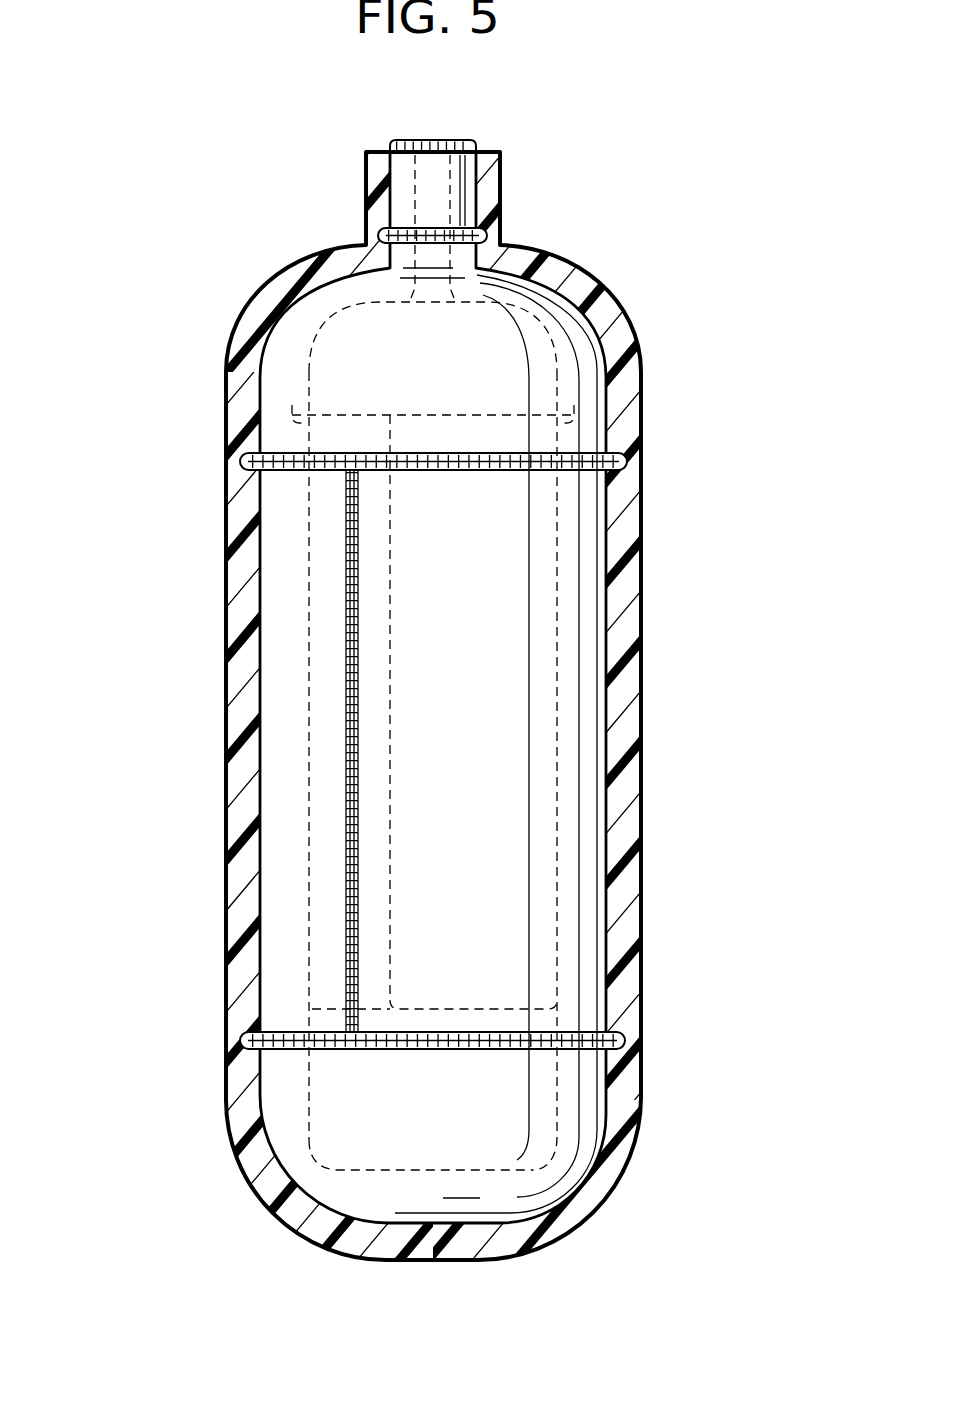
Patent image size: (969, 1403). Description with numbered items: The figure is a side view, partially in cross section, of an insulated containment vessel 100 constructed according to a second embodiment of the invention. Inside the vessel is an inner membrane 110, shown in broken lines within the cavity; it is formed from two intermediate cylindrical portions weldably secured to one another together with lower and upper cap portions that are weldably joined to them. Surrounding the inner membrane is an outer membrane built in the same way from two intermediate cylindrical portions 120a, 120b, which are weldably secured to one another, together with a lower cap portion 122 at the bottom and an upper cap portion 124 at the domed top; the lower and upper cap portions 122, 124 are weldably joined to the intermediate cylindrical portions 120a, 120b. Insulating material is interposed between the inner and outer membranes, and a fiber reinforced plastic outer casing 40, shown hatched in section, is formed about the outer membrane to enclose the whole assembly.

The insulated containment vessel 100 is at (484, 710).
The fiber reinforced plastic outer casing 40 is at (625, 833).
The upper cap portion 124 is at (587, 400).
The inner membrane 110 is at (557, 707).
The intermediate cylindrical portion 120a is at (277, 905).
The intermediate cylindrical portion 120b is at (570, 950).
The lower cap portion 122 is at (570, 1107).